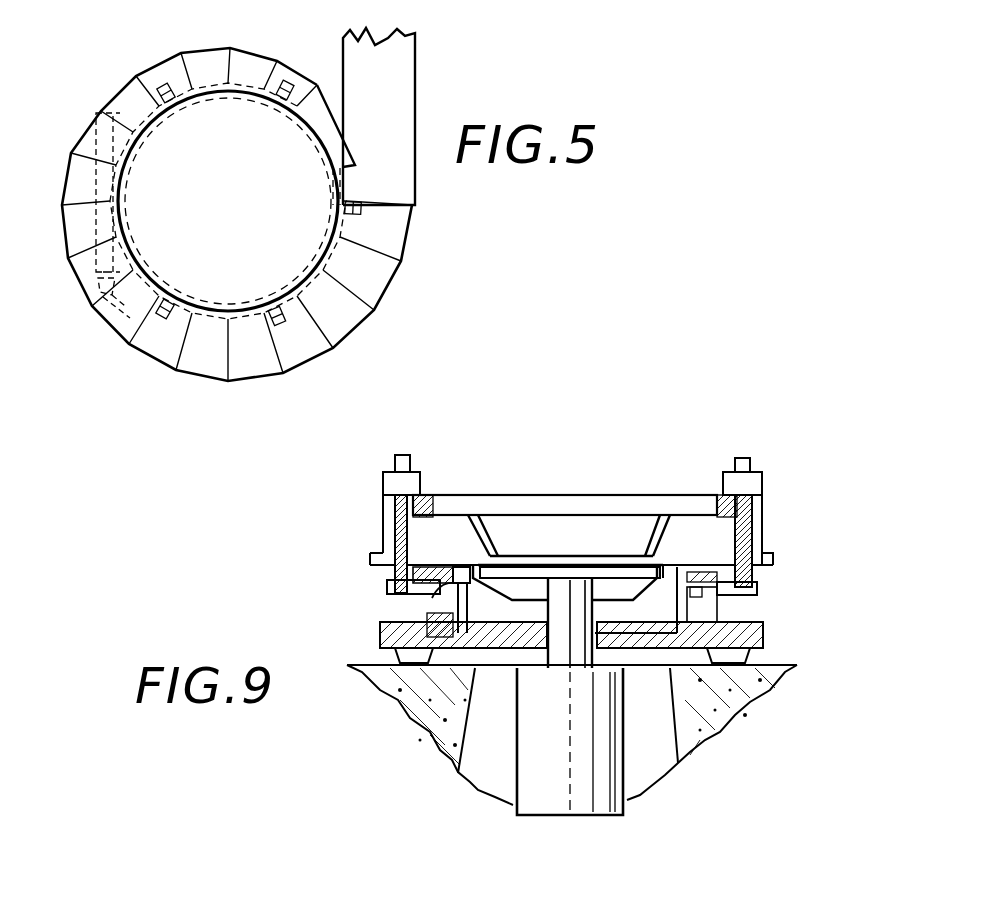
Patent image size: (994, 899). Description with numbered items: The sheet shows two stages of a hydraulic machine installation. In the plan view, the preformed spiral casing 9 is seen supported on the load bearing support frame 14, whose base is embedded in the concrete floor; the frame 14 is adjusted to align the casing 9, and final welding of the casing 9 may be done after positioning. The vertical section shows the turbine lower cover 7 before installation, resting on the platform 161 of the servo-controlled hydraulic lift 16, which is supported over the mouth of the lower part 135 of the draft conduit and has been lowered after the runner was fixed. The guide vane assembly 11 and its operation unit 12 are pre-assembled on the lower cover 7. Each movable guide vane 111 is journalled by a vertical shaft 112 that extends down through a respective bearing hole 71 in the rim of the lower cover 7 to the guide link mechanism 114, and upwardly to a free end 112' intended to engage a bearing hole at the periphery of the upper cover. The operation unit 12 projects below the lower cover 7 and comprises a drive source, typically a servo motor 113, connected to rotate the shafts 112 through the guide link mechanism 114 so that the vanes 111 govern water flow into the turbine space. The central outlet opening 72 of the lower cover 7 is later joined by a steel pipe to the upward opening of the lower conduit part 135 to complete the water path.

In FIG. 5, the spiral casing 9 is at (395, 229).
In FIG. 5, the load bearing support frame 14 is at (122, 322).
In FIG. 9, the lower cover 7 is at (770, 518).
In FIG. 9, the bearing hole 71 is at (425, 512).
In FIG. 9, the central outlet opening 72 is at (578, 552).
In FIG. 9, the guide vane assembly 11 is at (760, 450).
In FIG. 9, the guide vane 111 is at (757, 474).
In FIG. 9, the vertical shaft 112 is at (779, 594).
In FIG. 9, the free end 112' is at (735, 435).
In FIG. 9, the operation unit 12 is at (703, 603).
In FIG. 9, the servo motor 113 is at (768, 640).
In FIG. 9, the guide link mechanism 114 is at (432, 598).
In FIG. 9, the lift platform 161 is at (502, 573).
In FIG. 9, the servo-controlled hydraulic lift 16 is at (612, 767).
In FIG. 9, the lower part of the draft conduit 135 is at (720, 732).